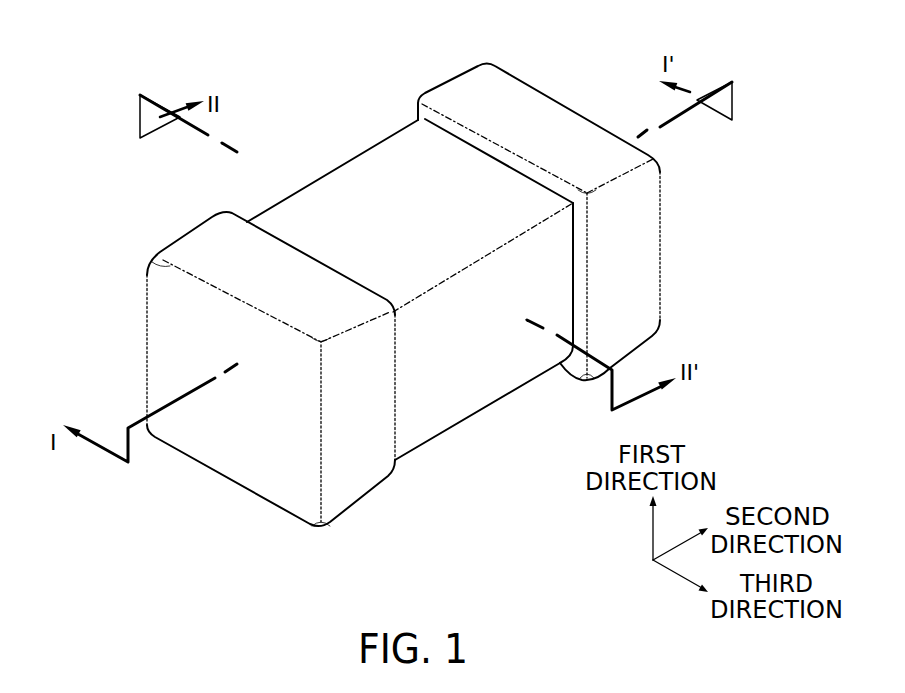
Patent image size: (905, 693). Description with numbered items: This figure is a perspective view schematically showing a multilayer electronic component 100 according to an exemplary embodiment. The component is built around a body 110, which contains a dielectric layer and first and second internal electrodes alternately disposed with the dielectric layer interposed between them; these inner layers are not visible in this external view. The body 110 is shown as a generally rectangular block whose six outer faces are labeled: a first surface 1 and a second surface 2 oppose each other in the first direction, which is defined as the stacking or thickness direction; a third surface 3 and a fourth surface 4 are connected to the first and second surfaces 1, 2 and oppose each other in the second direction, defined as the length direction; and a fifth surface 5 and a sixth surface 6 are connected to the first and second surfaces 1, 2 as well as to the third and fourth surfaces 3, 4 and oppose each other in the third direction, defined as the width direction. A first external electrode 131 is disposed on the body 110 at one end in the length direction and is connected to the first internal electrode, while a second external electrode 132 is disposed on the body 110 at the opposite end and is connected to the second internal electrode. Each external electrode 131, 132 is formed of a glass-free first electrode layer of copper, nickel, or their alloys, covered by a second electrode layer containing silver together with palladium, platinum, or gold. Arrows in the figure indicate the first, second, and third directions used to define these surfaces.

The multilayer electronic component 100 is at (172, 33).
The body 110 is at (313, 210).
The first external electrode 131 is at (212, 240).
The second external electrode 132 is at (462, 98).
The first surface 1 is at (452, 383).
The second surface 2 is at (419, 176).
The third surface 3 is at (238, 431).
The fourth surface 4 is at (614, 233).
The fifth surface 5 is at (499, 357).
The sixth surface 6 is at (366, 199).